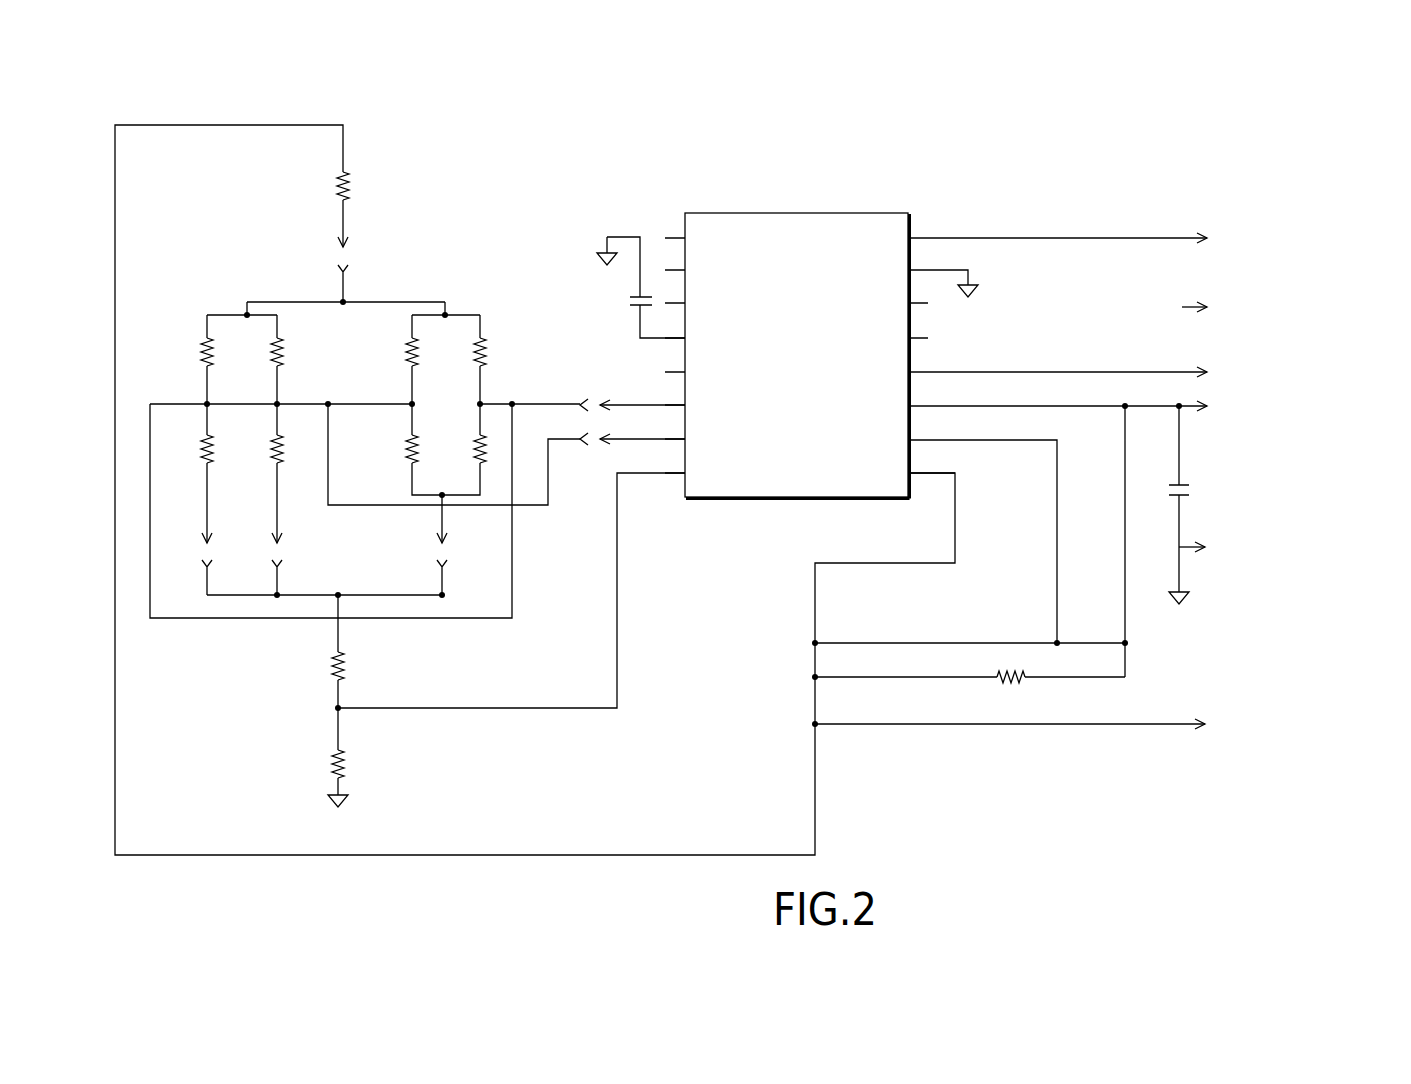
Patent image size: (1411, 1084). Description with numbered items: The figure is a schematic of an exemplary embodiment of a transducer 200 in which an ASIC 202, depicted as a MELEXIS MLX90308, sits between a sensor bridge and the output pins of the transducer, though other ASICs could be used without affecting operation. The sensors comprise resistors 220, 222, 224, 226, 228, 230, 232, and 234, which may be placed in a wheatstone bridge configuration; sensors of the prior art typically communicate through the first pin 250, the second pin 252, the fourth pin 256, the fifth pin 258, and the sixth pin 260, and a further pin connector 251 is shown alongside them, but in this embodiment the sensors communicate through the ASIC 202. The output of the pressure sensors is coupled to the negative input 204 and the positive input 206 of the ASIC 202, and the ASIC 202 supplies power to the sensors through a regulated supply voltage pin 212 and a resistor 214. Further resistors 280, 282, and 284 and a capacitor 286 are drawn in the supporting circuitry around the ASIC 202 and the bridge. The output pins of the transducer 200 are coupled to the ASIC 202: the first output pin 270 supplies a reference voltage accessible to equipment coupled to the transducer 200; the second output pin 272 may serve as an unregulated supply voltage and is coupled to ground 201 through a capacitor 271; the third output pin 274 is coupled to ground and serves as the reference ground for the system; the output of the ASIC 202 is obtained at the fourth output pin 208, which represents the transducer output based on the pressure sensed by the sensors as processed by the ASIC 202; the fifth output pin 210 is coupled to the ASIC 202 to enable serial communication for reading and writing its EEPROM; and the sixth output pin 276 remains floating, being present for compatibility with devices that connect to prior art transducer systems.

The transducer 200 is at (905, 773).
The ground 201 is at (1190, 600).
The ASIC 202 is at (800, 213).
The negative input 204 is at (656, 400).
The positive input 206 is at (585, 481).
The output pin 4 208 is at (1225, 355).
The output pin 5 210 is at (1243, 218).
The regulated supply voltage pin 212 is at (912, 484).
The resistor 214 is at (357, 183).
The resistor 220 is at (200, 334).
The resistor 222 is at (212, 432).
The resistor 224 is at (288, 337).
The resistor 226 is at (286, 430).
The resistor 228 is at (406, 362).
The resistor 230 is at (405, 441).
The resistor 232 is at (494, 335).
The resistor 234 is at (459, 447).
The pin 1 250 is at (579, 372).
The pin 3 connector 251 is at (579, 432).
The pin 2 252 is at (357, 247).
The pin 4 256 is at (448, 546).
The pin 5 258 is at (218, 542).
The pin 6 260 is at (288, 553).
The output pin 1 270 is at (1218, 706).
The capacitor 271 is at (1195, 488).
The output pin 2 272 is at (1240, 425).
The output pin 3 274 is at (1207, 535).
The output pin 6 276 is at (1225, 288).
The resistor R4 280 is at (388, 663).
The resistor R5 282 is at (385, 758).
The resistor 284 is at (1022, 670).
The capacitor 286 is at (647, 290).